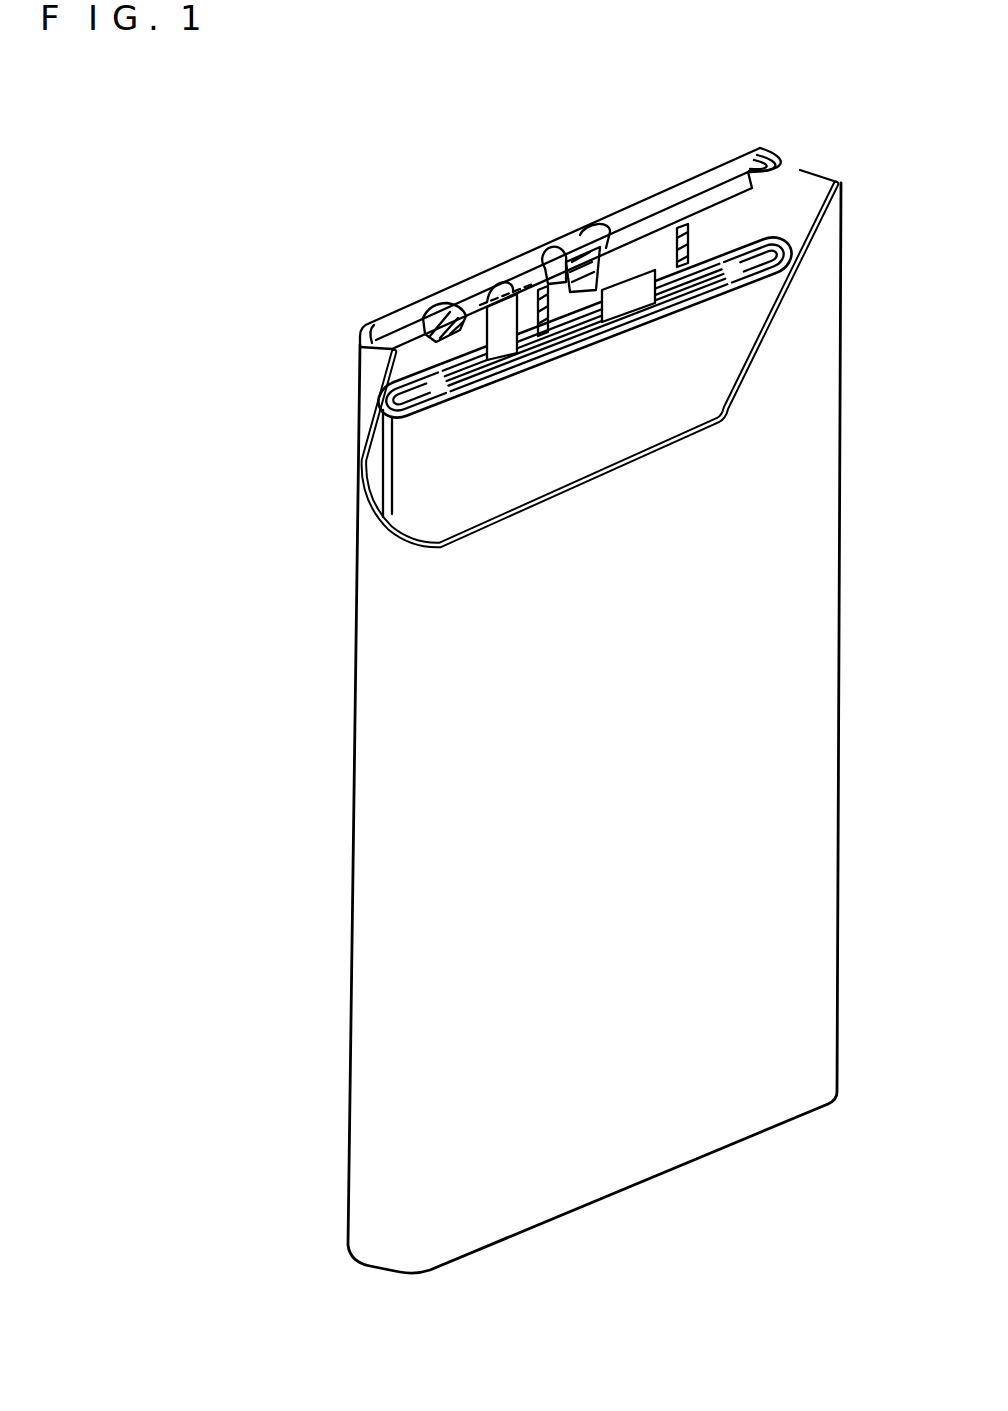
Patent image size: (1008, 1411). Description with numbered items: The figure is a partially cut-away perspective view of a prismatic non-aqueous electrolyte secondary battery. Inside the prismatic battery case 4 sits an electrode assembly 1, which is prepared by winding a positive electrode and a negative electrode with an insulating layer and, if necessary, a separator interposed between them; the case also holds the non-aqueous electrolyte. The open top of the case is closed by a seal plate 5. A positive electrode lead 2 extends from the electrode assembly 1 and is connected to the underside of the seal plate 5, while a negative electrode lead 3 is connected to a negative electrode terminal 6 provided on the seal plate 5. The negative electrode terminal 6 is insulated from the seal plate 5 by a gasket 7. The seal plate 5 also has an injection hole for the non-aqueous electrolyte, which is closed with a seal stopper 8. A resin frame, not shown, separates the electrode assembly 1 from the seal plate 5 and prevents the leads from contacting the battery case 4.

The electrode assembly 1 is at (597, 448).
The positive electrode lead 2 is at (503, 350).
The negative electrode lead 3 is at (639, 297).
The battery case 4 is at (800, 915).
The seal plate 5 is at (658, 226).
The negative electrode terminal 6 is at (590, 252).
The gasket 7 is at (521, 263).
The seal stopper 8 is at (442, 320).